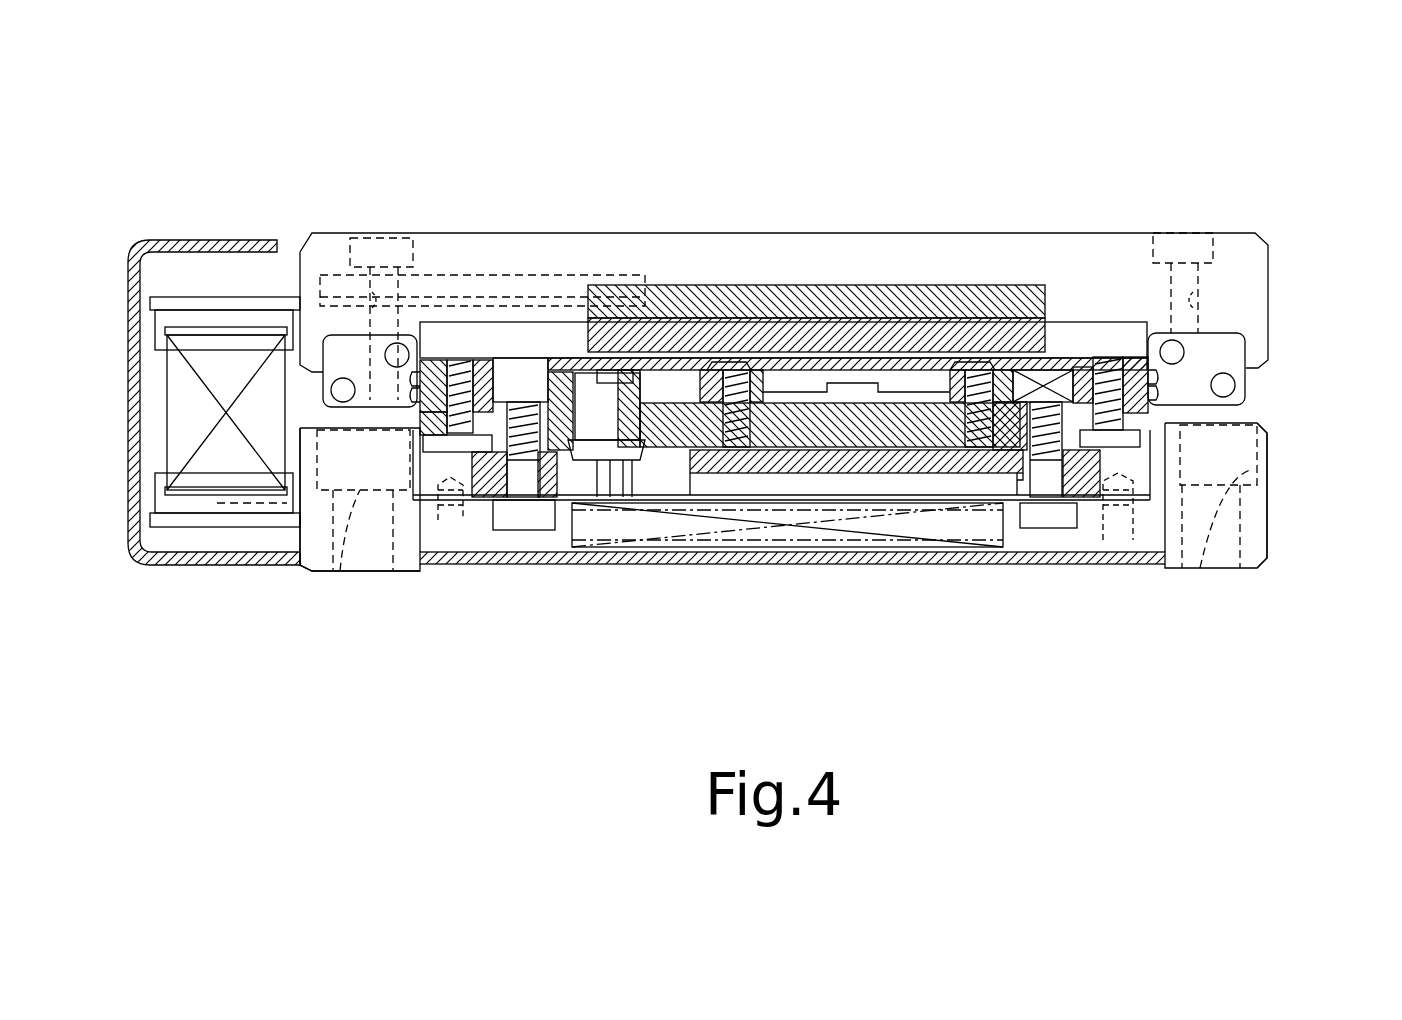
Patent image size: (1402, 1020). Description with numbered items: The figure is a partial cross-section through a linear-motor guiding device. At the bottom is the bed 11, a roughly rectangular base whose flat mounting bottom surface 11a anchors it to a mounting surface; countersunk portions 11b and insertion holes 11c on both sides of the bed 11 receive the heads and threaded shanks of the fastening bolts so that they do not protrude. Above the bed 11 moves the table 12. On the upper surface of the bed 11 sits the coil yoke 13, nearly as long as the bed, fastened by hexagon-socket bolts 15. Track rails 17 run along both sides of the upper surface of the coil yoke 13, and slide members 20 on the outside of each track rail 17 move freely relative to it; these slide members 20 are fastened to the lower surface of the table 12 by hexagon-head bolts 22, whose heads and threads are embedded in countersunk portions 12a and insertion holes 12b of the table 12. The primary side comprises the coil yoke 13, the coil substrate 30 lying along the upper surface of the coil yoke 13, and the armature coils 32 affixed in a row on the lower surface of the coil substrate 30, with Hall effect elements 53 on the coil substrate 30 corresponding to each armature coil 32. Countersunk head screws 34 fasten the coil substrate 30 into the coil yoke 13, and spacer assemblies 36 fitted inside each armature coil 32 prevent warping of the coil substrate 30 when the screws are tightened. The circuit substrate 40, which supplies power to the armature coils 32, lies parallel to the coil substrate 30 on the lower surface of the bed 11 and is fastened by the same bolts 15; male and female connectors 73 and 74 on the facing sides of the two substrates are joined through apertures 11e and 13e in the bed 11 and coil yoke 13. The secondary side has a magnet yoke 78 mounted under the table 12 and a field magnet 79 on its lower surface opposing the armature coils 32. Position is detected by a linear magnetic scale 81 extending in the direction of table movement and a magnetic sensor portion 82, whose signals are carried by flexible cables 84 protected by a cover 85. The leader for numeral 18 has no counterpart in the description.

The bed 11 is at (1275, 503).
The flat mounting bottom surface 11a is at (310, 572).
The countersunk portions 11b is at (372, 535).
The insertion holes 11c is at (340, 545).
The aperture 11e is at (587, 517).
The table 12 is at (1262, 228).
The countersunk portions 12a is at (372, 300).
The insertion holes 12b is at (303, 233).
The coil yoke 13 is at (908, 433).
The aperture 13e is at (700, 475).
The bolts 15 is at (520, 508).
The track rail 17 is at (475, 345).
The support arm 18 is at (480, 447).
The slide member 20 is at (316, 385).
The bolts 22 is at (377, 237).
The coil substrate 30 is at (543, 322).
The armature coils 32 is at (1047, 377).
The countersunk head screws 34 is at (704, 370).
The spacer assemblies 36 is at (782, 383).
The circuit substrate 40 is at (757, 505).
The Hall effect elements 53 is at (613, 370).
The male connector 73 is at (603, 420).
The female connector 74 is at (625, 500).
The magnet yoke 78 is at (905, 308).
The field magnet 79 is at (857, 332).
The linear magnetic scale 81 is at (515, 368).
The magnetic sensor portion 82 is at (542, 330).
The cables 84 is at (182, 430).
The cover 85 is at (137, 295).